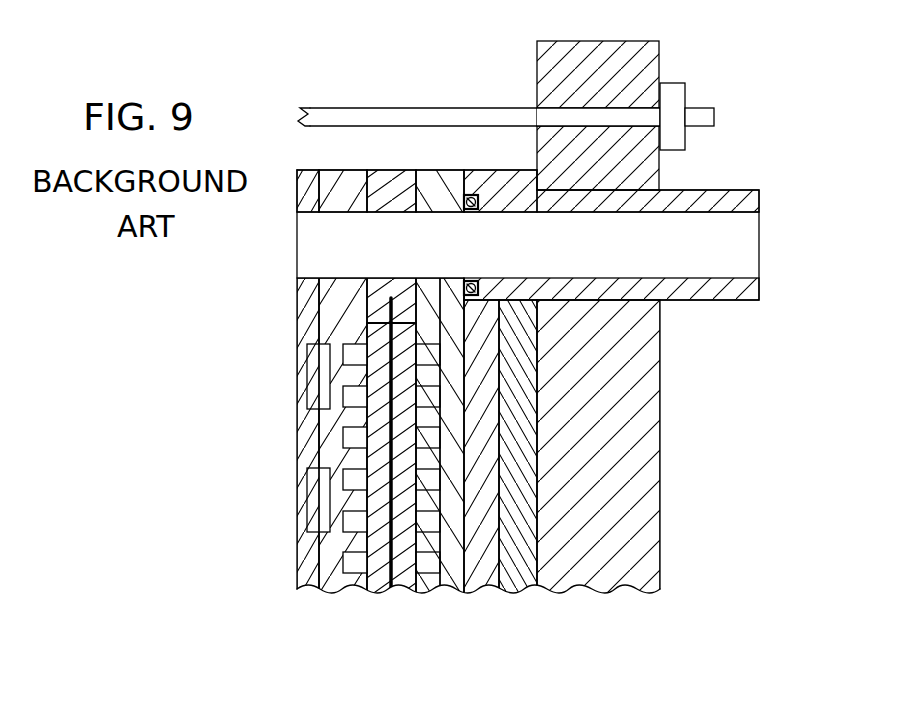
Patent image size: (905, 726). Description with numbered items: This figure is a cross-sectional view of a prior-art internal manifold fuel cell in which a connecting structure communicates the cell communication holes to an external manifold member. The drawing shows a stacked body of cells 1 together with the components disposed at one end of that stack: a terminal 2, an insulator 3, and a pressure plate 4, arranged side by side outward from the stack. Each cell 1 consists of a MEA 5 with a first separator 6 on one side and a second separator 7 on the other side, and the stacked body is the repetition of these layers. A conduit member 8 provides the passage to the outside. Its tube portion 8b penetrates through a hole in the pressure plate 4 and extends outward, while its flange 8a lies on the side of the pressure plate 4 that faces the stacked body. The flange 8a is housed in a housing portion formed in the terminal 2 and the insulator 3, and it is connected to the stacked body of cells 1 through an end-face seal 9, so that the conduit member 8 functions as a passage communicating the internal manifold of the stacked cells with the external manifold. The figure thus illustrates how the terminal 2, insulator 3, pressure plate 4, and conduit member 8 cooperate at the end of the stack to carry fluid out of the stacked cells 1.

The cell 1 is at (385, 482).
The terminal 2 is at (479, 580).
The insulator 3 is at (516, 575).
The pressure plate 4 is at (650, 397).
The MEA 5 is at (382, 583).
The first separator 6 is at (440, 464).
The second separator 7 is at (330, 583).
The conduit member 8 is at (554, 186).
The flange 8a is at (503, 176).
The tube portion 8b is at (727, 198).
The end-face seal 9 is at (463, 202).